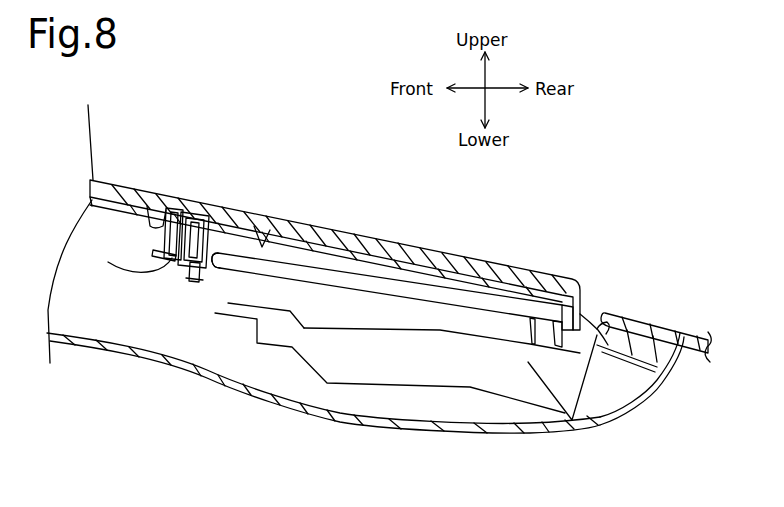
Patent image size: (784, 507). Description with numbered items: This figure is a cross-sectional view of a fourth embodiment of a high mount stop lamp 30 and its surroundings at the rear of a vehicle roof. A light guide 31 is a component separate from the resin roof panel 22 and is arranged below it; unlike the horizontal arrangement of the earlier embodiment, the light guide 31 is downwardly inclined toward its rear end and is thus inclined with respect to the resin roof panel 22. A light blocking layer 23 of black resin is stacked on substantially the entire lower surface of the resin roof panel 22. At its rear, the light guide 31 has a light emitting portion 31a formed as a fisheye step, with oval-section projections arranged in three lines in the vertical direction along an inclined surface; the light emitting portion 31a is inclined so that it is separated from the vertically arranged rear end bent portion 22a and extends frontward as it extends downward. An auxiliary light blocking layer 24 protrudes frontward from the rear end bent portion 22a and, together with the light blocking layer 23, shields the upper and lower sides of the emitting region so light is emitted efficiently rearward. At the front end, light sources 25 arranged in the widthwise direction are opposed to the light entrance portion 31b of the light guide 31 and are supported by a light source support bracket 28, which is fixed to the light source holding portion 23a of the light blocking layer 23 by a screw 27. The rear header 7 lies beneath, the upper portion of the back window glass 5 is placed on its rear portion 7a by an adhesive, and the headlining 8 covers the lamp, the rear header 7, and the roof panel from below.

The back window glass 5 is at (681, 327).
The rear header 7 is at (483, 350).
The rear portion of the rear header 7a is at (637, 364).
The headlining 8 is at (655, 399).
The resin roof panel 22 is at (371, 244).
The rear end bent portion 22a is at (597, 309).
The light blocking layer 23 is at (260, 232).
The light source holding portion 23a is at (148, 206).
The auxiliary light blocking layer 24 is at (548, 320).
The light sources 25 is at (213, 222).
The screw 27 is at (108, 262).
The light source support bracket 28 is at (180, 273).
The high mount stop lamp 30 is at (330, 258).
The light guide 31 is at (407, 286).
The light emitting portion 31a is at (585, 308).
The light entrance portion 31b is at (203, 280).